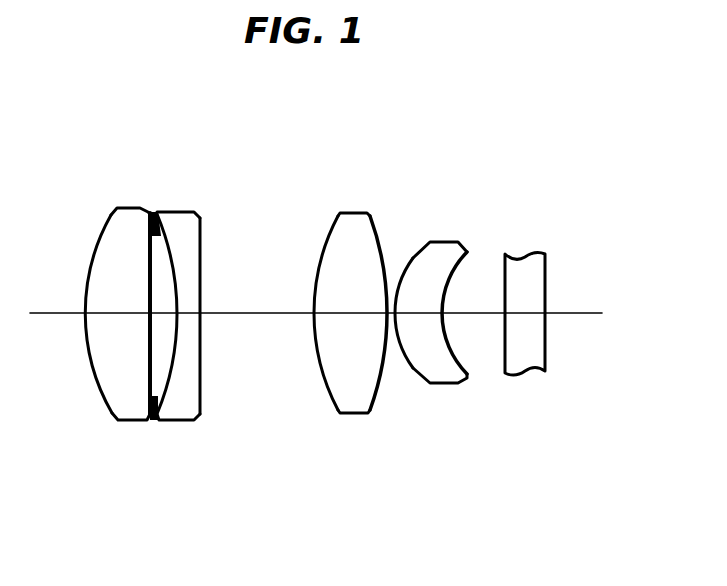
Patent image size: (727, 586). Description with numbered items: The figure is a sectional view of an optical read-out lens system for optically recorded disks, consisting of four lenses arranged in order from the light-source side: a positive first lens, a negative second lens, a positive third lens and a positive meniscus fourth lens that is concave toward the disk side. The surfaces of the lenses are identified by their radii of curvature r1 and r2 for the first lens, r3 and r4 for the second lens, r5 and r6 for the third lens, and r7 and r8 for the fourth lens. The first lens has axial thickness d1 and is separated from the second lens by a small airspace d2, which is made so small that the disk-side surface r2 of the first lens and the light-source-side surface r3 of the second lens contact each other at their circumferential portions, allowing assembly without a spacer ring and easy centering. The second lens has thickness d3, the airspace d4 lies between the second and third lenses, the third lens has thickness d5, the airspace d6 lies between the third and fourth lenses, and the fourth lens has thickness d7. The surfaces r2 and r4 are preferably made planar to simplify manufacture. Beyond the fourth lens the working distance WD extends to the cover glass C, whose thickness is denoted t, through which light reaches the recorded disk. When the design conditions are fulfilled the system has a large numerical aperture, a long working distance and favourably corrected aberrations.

The radius of curvature of the light-source-side surface of the first lens r1 is at (110, 216).
The radius of curvature of the disk-side surface of the first lens r2 is at (148, 213).
The radius of curvature of the light-source-side surface of the second lens r3 is at (161, 238).
The radius of curvature of the disk-side surface of the second lens r4 is at (201, 232).
The radius of curvature of the light-source-side surface of the third lens r5 is at (333, 224).
The radius of curvature of the disk-side surface of the third lens r6 is at (374, 287).
The radius of curvature of the light-source-side surface of the fourth lens r7 is at (418, 252).
The radius of curvature of the disk-side surface of the fourth lens r8 is at (468, 259).
The thickness of the first lens d1 is at (121, 315).
The airspace between the first and second lenses d2 is at (168, 311).
The thickness of the second lens d3 is at (188, 318).
The airspace between the second and third lenses d4 is at (260, 315).
The thickness of the third lens d5 is at (354, 315).
The airspace between the third and fourth lenses d6 is at (392, 315).
The thickness of the fourth lens d7 is at (425, 315).
The working distance WD is at (473, 327).
The cover glass C is at (547, 259).
The thickness of the cover glass t is at (527, 315).